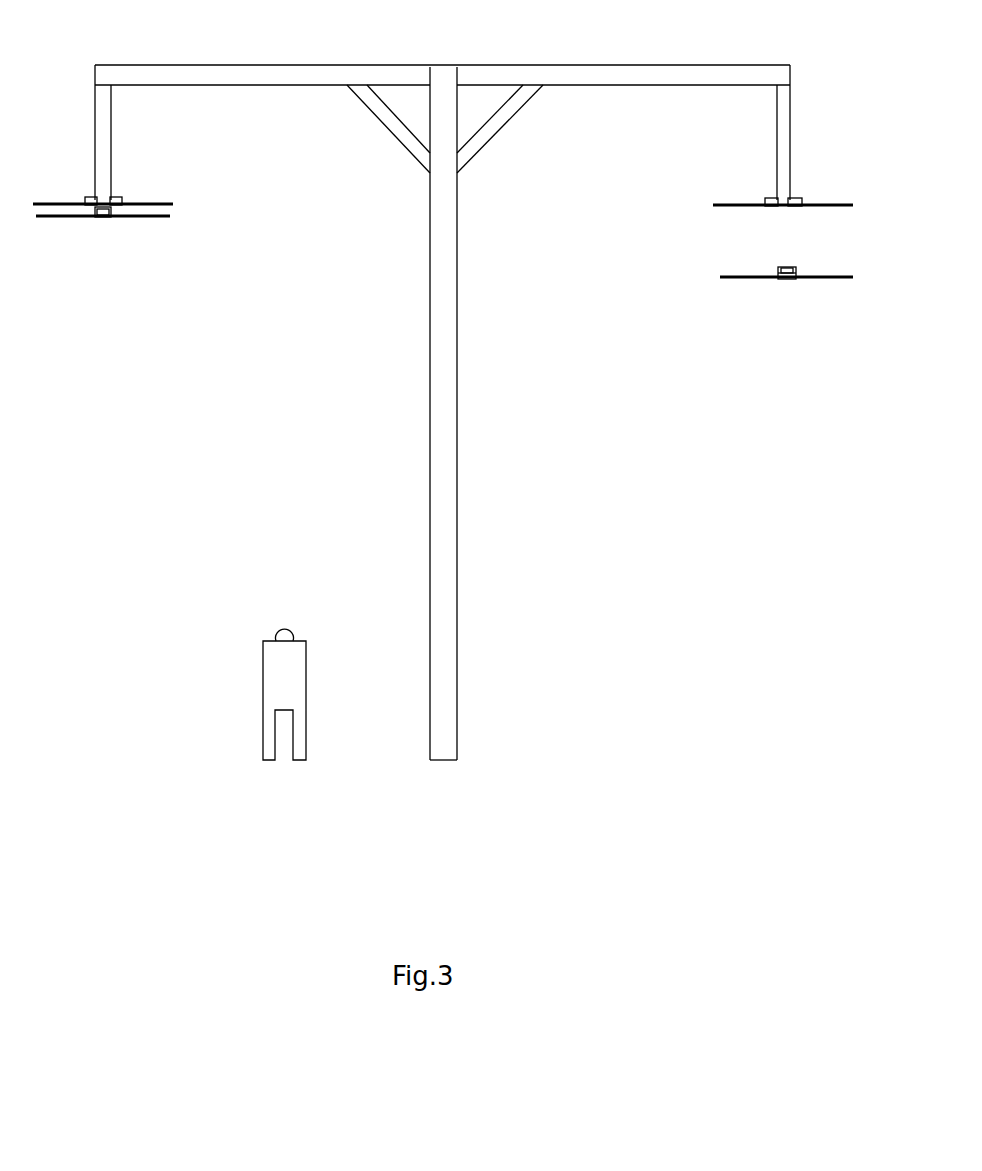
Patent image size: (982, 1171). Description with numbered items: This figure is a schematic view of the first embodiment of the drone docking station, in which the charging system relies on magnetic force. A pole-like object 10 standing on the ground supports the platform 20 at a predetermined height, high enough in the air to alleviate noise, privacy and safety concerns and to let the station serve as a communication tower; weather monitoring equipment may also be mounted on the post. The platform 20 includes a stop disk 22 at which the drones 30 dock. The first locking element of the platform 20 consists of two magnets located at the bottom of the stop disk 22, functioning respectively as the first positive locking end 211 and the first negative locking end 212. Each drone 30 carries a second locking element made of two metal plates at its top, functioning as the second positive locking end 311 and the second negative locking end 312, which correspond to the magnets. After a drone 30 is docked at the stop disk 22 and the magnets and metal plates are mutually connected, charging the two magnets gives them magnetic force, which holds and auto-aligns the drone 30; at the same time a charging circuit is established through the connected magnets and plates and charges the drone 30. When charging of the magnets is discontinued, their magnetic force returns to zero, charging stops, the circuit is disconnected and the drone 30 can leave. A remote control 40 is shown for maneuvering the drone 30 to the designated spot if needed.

The pole-like object 10 is at (458, 538).
The platform 20 is at (140, 61).
The stop disk 22 is at (140, 203).
The first positive locking end 211 is at (769, 208).
The first negative locking end 212 is at (793, 208).
The drone 30 is at (103, 220).
The second positive locking end 311 is at (783, 270).
The second negative locking end 312 is at (790, 268).
The remote control 40 is at (263, 660).